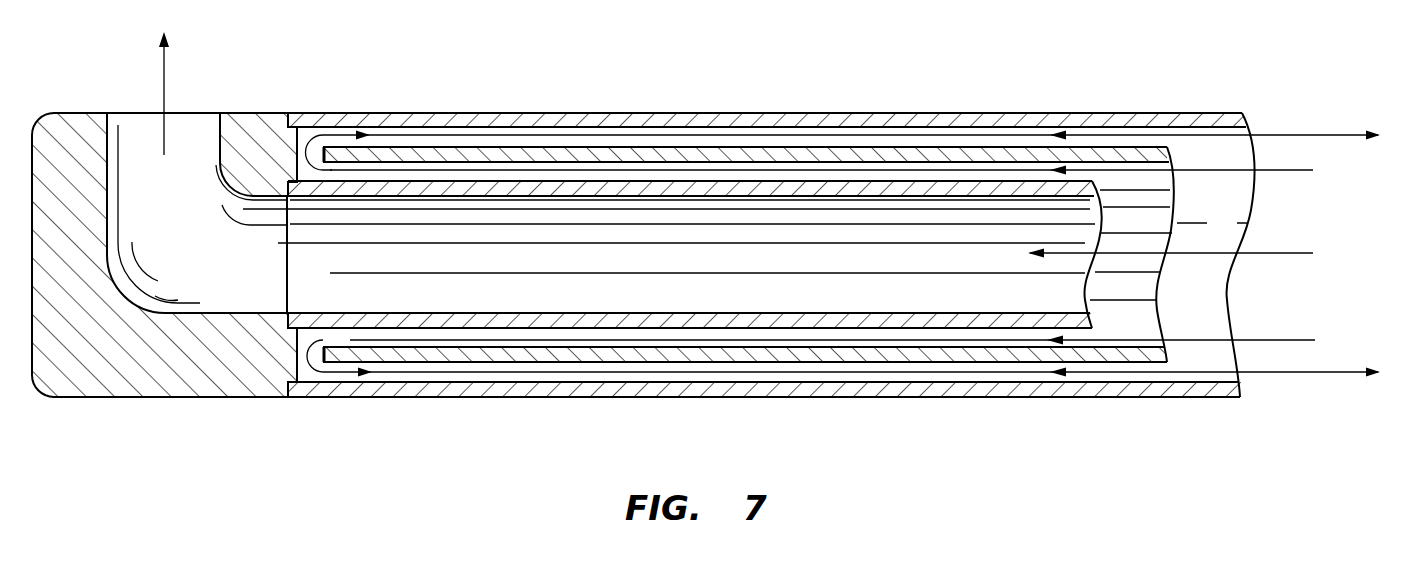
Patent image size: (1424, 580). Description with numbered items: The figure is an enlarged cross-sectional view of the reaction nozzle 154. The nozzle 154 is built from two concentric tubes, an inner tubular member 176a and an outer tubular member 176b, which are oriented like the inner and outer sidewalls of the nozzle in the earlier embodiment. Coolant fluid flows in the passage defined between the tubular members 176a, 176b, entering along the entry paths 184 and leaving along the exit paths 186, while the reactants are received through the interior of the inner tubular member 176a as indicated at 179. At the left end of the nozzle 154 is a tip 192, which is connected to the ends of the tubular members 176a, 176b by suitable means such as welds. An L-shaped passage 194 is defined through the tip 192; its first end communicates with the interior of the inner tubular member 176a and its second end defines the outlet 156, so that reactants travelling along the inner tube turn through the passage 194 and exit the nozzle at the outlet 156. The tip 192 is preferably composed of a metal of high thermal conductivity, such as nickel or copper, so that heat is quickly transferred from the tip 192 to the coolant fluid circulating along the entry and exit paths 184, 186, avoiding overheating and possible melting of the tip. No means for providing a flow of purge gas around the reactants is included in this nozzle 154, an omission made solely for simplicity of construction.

The reaction nozzle 154 is at (404, 98).
The outlet 156 is at (192, 113).
The tip 192 is at (257, 113).
The L-shaped passage 194 is at (166, 254).
The inner tubular member 176a is at (566, 197).
The outer tubular member 176b is at (617, 113).
The entry paths 184 is at (1293, 170).
The exit paths 186 is at (1327, 134).
The reactant flow 179 is at (1300, 253).